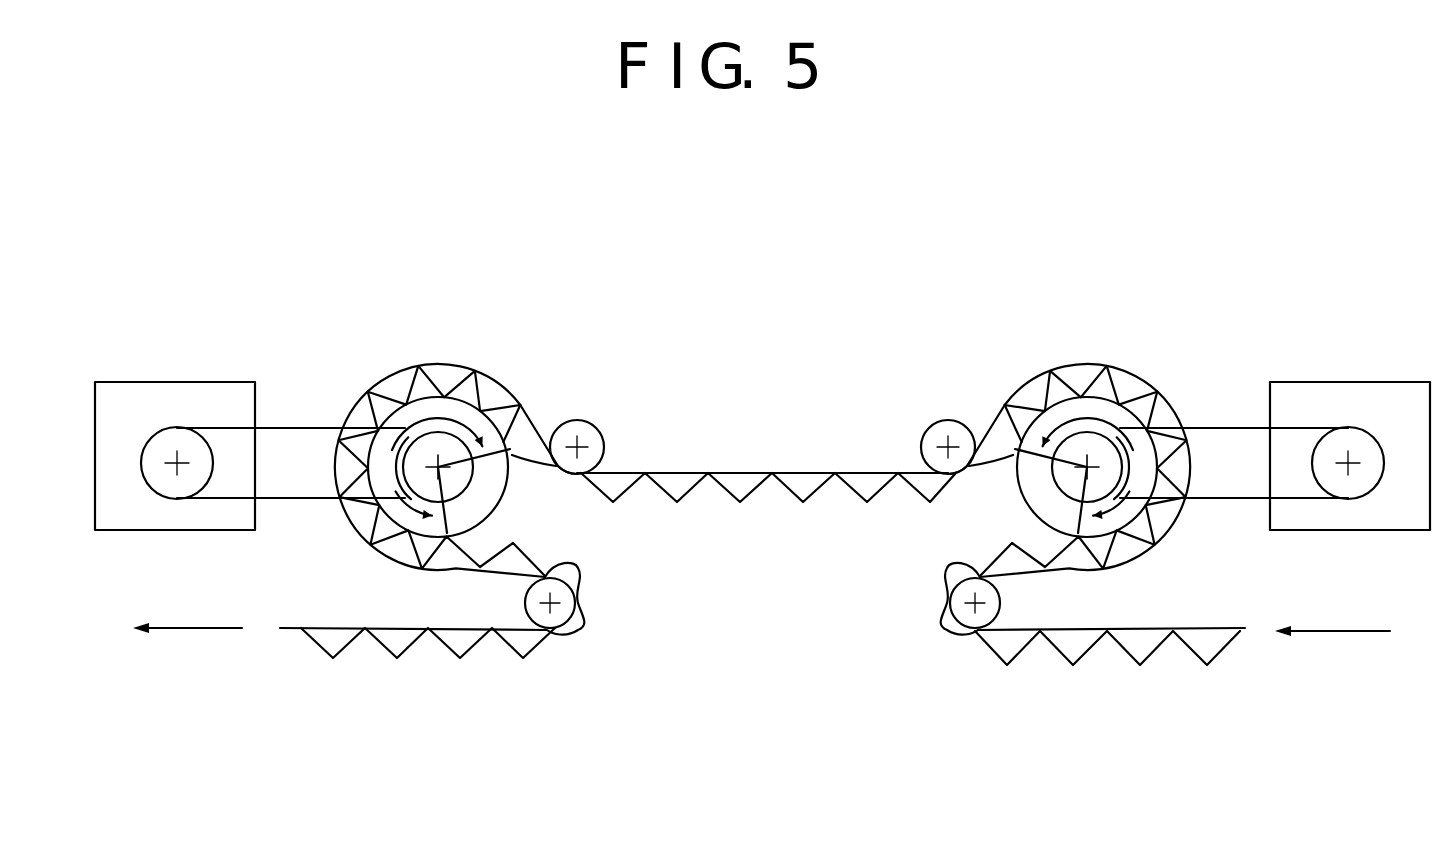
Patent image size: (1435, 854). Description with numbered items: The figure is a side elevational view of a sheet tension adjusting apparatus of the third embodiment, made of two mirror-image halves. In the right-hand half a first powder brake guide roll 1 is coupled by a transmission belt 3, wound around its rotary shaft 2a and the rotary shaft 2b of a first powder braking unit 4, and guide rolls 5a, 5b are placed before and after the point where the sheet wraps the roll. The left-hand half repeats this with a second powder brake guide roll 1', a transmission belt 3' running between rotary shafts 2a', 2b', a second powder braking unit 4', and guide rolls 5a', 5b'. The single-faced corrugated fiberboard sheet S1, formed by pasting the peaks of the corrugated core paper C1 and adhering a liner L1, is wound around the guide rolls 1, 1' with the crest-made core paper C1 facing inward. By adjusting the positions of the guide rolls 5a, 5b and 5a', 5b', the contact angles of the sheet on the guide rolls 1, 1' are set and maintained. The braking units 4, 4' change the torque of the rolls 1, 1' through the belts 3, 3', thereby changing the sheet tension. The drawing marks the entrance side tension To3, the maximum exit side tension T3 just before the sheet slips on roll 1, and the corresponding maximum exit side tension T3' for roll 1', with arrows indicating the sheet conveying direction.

The first powder brake guide roll 1 is at (1087, 416).
The second powder brake guide roll 1' is at (438, 416).
The rotary shaft 2a is at (998, 495).
The rotary shaft 2a' is at (535, 497).
The rotary shaft 2b is at (1362, 397).
The rotary shaft 2b' is at (187, 398).
The transmission belt 3 is at (1144, 480).
The transmission belt 3' is at (380, 484).
The first powder braking unit 4 is at (1350, 413).
The second powder braking unit 4' is at (175, 414).
The guide roll 5a is at (959, 654).
The guide roll 5a' is at (587, 653).
The guide roll 5b is at (934, 408).
The guide roll 5b' is at (591, 400).
The maximum roll exit side tension T3 is at (766, 442).
The maximum exit side tension T3' is at (428, 685).
The entrance side tension To3 is at (1033, 573).
The single-faced corrugated fiberboard sheet S1 is at (1061, 665).
The corrugated core paper C1 is at (1208, 660).
The liner L1 is at (1205, 628).